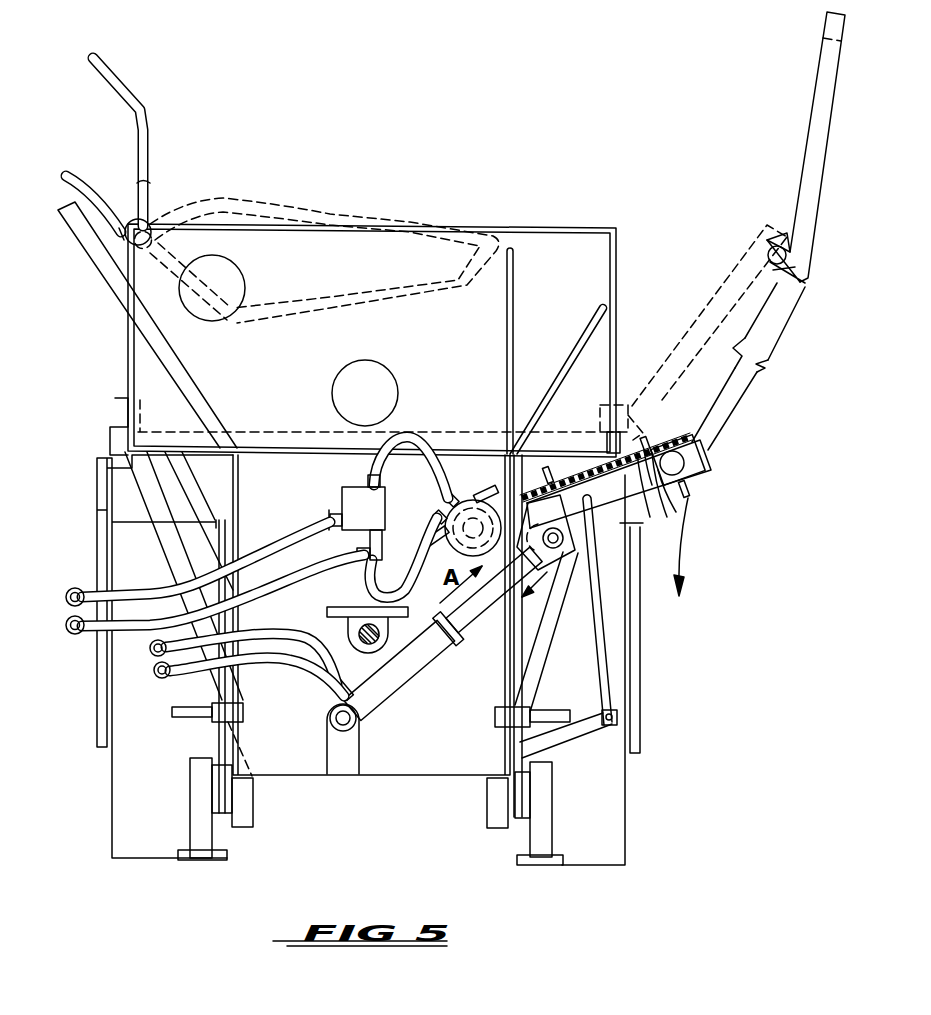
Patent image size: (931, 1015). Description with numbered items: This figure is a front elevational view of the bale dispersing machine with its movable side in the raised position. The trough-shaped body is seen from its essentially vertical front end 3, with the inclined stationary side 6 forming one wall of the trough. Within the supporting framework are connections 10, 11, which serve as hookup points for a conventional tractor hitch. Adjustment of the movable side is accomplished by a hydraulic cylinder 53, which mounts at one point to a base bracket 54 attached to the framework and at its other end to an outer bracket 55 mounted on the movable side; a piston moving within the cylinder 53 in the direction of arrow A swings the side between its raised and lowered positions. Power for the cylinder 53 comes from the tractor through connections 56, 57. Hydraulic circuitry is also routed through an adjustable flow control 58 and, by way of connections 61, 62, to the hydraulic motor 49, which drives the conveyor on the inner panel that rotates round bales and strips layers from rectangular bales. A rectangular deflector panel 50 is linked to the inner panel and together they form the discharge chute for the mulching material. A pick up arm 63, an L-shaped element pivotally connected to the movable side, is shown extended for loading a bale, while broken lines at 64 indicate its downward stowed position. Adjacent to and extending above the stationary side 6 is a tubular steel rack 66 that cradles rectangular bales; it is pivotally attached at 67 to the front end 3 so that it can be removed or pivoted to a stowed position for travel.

The front end 3 is at (268, 240).
The stationary side 6 is at (78, 222).
The connection 10 is at (178, 718).
The connection 11 is at (550, 711).
The hydraulic motor 49 is at (472, 500).
The rectangular deflector panel 50 is at (577, 730).
The hydraulic cylinder 53 is at (408, 684).
The base bracket 54 is at (356, 753).
The outer bracket 55 is at (546, 532).
The connection 56 is at (160, 680).
The connection 57 is at (153, 656).
The adjustable flow control 58 is at (342, 500).
The connection 61 is at (76, 634).
The connection 62 is at (75, 588).
The pick up arm 63 is at (820, 103).
The stowed position of pick up arm 64 is at (697, 330).
The rack 66 is at (150, 150).
The pivotal attachment 67 is at (155, 240).